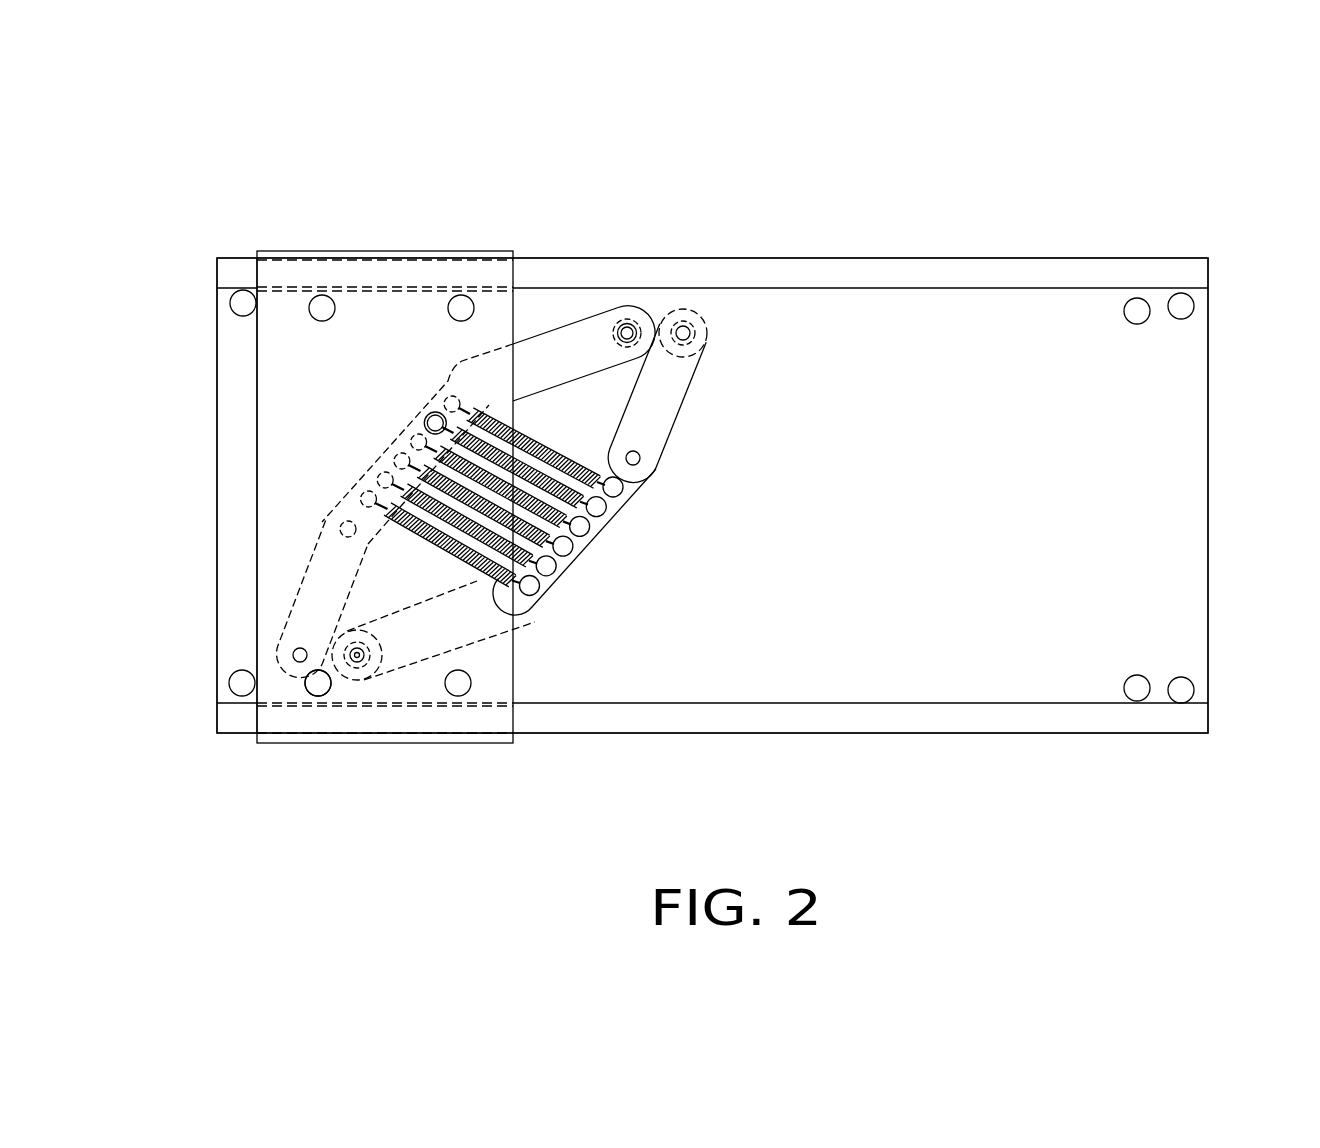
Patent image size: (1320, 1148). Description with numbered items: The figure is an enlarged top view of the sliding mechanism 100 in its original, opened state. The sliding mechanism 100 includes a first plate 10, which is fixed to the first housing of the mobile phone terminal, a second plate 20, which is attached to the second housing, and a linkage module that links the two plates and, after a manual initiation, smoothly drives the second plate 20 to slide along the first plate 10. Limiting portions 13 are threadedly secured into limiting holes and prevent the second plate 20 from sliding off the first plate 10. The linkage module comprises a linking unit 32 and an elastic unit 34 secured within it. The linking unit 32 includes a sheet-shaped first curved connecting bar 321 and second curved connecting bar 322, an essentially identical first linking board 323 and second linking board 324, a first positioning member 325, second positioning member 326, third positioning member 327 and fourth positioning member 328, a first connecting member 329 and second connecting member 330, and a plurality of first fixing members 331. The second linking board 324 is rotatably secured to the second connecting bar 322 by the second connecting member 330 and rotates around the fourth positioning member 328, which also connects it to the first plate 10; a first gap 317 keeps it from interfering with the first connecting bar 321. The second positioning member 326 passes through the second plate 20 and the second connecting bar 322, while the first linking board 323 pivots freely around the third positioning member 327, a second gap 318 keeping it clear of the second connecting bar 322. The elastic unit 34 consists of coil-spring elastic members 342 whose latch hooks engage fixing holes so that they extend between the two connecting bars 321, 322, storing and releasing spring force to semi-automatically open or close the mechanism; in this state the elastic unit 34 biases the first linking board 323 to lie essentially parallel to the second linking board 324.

The sliding mechanism 100 is at (752, 80).
The first plate 10 is at (968, 225).
The limiting portions 13 is at (243, 303).
The second plate 20 is at (400, 224).
The linking unit 32 is at (579, 307).
The elastic unit 34 is at (481, 578).
The first gap 317 is at (333, 680).
The second gap 318 is at (658, 323).
The first curved connecting bar 321 is at (460, 381).
The second curved connecting bar 322 is at (552, 600).
The first linking board 323 is at (320, 606).
The second linking board 324 is at (655, 413).
The first positioning member 325 is at (627, 333).
The second positioning member 326 is at (360, 657).
The third positioning member 327 is at (300, 655).
The fourth positioning member 328 is at (683, 333).
The first connecting member 329 is at (345, 527).
The second connecting member 330 is at (637, 459).
The first fixing members 331 is at (603, 511).
The elastic members 342 is at (424, 428).